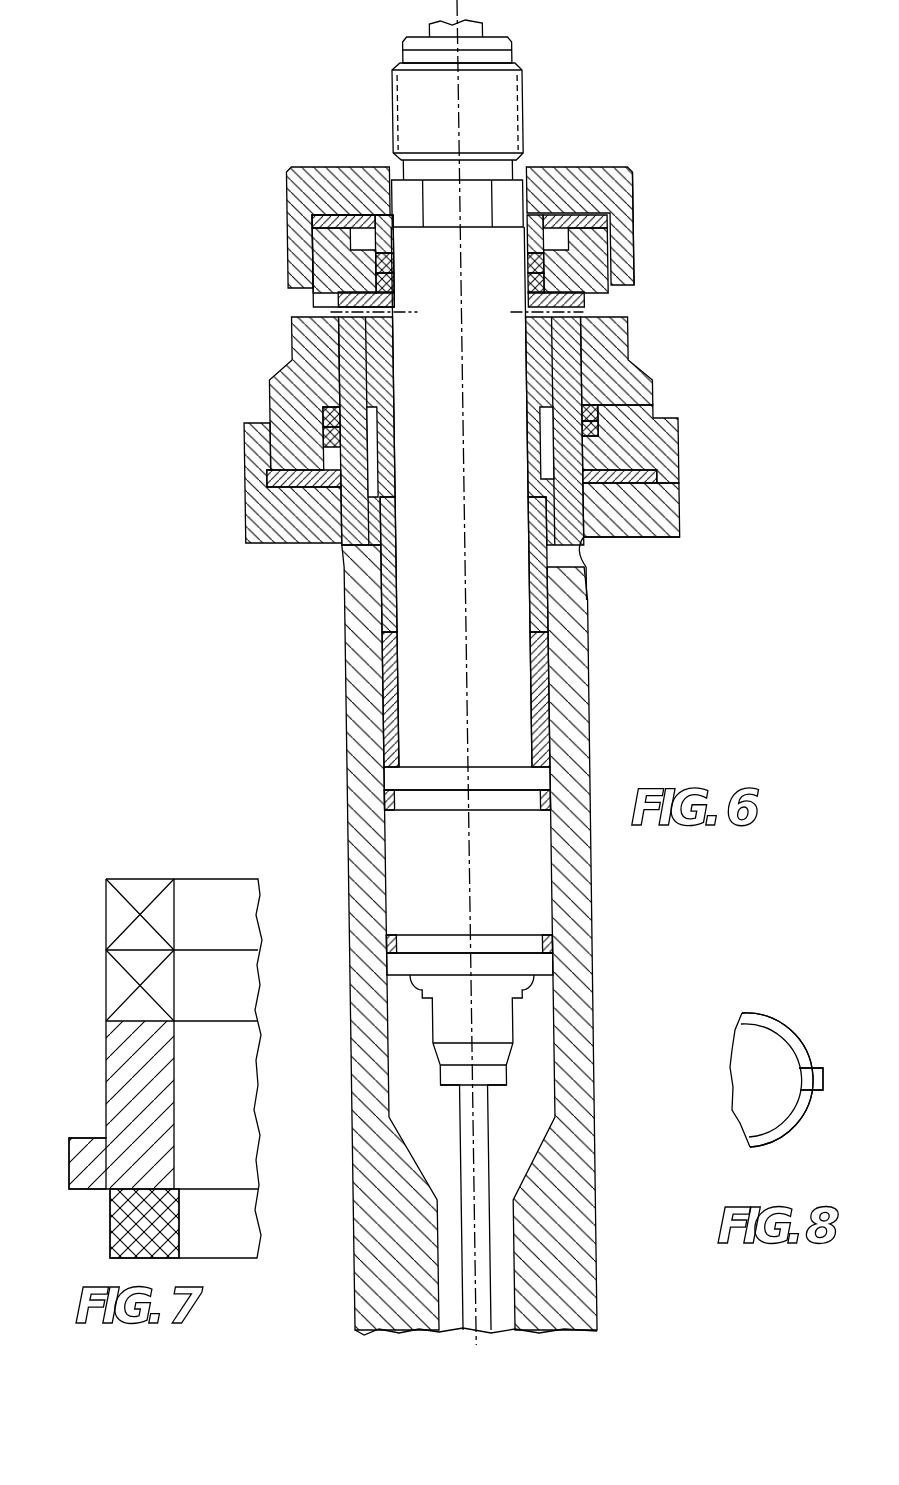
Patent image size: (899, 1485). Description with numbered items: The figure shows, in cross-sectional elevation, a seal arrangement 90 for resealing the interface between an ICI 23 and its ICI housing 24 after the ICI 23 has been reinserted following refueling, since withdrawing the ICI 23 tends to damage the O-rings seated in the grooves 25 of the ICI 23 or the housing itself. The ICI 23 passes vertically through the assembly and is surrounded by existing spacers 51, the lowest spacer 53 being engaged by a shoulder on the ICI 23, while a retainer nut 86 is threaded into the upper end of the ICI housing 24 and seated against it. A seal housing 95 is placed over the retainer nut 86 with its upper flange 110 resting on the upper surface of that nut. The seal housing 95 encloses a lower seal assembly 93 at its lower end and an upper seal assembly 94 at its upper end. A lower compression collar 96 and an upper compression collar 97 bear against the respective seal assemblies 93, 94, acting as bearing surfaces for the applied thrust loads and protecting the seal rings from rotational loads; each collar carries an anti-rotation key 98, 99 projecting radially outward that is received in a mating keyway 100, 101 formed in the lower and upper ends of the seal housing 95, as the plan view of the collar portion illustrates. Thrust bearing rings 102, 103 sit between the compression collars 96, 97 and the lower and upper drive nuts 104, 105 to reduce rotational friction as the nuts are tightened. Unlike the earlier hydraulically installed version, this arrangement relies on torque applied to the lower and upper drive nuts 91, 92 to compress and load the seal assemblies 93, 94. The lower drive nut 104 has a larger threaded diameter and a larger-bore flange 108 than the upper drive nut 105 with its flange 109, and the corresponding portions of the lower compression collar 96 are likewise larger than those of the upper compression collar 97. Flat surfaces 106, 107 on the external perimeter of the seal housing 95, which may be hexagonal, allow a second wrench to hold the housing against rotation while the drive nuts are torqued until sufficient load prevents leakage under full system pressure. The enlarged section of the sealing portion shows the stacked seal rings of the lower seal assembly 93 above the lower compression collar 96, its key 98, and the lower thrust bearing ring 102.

In FIG. 6, the ICI 23 is at (497, 703).
In FIG. 6, the ICI housing 24 is at (564, 745).
In FIG. 6, the grooves 25 is at (377, 822).
In FIG. 6, the spacers 51 is at (379, 600).
In FIG. 6, the lowest spacer 53 is at (377, 685).
In FIG. 6, the retainer nut 86 is at (384, 388).
In FIG. 6, the seal arrangement 90 is at (160, 264).
In FIG. 6, the lower drive nut 91 is at (663, 503).
In FIG. 6, the upper drive nut 92 is at (634, 210).
In FIG. 6, the lower seal assembly 93 is at (312, 405).
In FIG. 7, the lower seal assembly 93 is at (106, 982).
In FIG. 6, the upper seal assembly 94 is at (569, 267).
In FIG. 6, the seal housing 95 is at (608, 373).
In FIG. 6, the lower compression collar 96 is at (301, 445).
In FIG. 7, the lower compression collar 96 is at (118, 1090).
In FIG. 8, the lower compression collar 96 is at (780, 1127).
In FIG. 6, the upper compression collar 97 is at (380, 240).
In FIG. 8, the upper compression collar 97 is at (783, 1104).
In FIG. 6, the anti-rotation key 98 is at (268, 470).
In FIG. 7, the anti-rotation key 98 is at (80, 1165).
In FIG. 8, the anti-rotation key 98 is at (812, 1068).
In FIG. 6, the anti-rotation key 99 is at (555, 221).
In FIG. 8, the anti-rotation key 99 is at (822, 1048).
In FIG. 6, the keyway 100 is at (597, 450).
In FIG. 6, the keyway 101 is at (551, 247).
In FIG. 6, the lower thrust bearing ring 102 is at (317, 501).
In FIG. 7, the lower thrust bearing ring 102 is at (118, 1225).
In FIG. 6, the upper thrust bearing ring 103 is at (529, 200).
In FIG. 6, the lower drive nut 104 is at (636, 537).
In FIG. 6, the upper drive nut 105 is at (596, 163).
In FIG. 6, the flat surface 106 is at (284, 333).
In FIG. 6, the flat surface 107 is at (627, 335).
In FIG. 6, the flange 108 is at (599, 527).
In FIG. 6, the flange 109 is at (371, 172).
In FIG. 6, the upper flange 110 is at (344, 282).